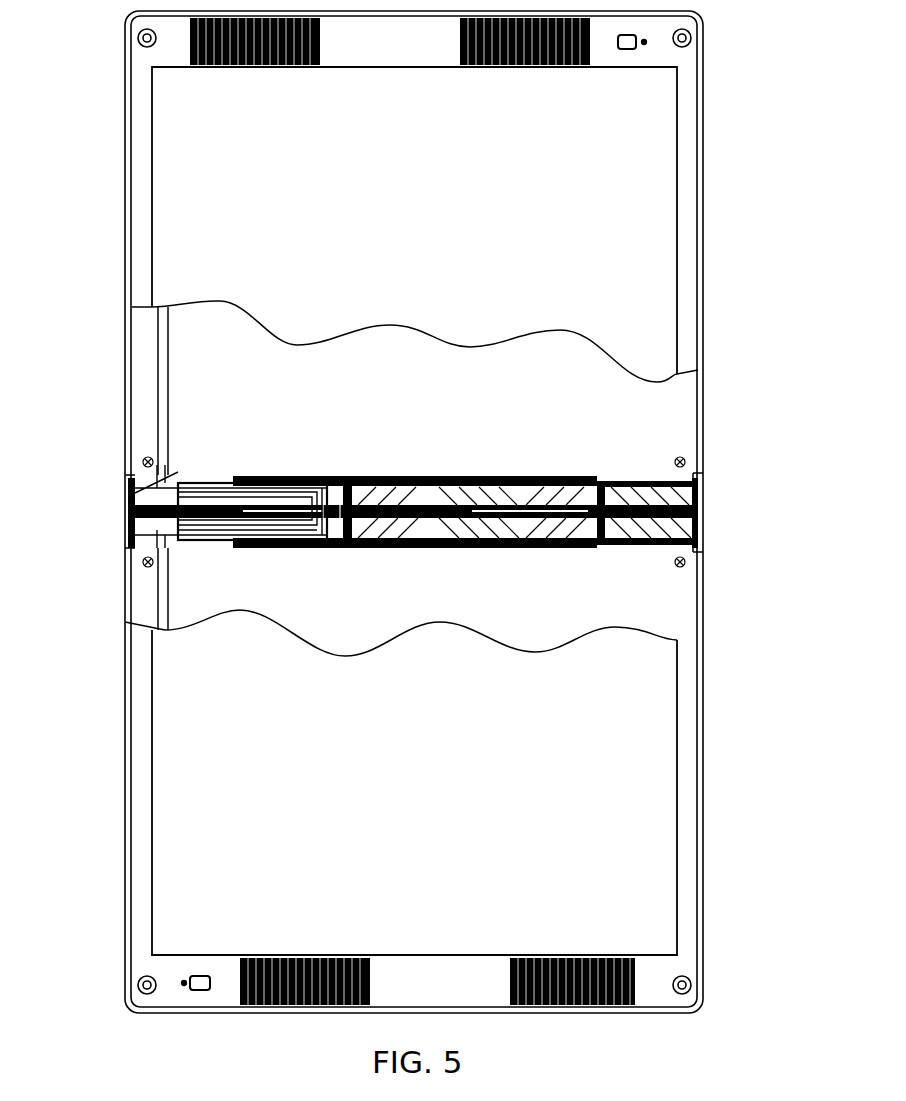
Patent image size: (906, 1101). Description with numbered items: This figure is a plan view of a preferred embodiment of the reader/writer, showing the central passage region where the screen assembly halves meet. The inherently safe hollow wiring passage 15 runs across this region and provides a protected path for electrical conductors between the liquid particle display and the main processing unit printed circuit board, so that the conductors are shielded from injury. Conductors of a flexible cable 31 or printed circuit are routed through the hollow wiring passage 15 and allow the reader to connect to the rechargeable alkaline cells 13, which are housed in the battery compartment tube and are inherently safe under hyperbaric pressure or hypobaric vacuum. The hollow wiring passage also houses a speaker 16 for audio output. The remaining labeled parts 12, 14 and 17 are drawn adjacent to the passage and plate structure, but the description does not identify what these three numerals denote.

The second housing 12 is at (700, 492).
The rechargeable alkaline cells 13 is at (632, 482).
The hinge cover 14 is at (345, 478).
The hollow wiring passage 15 is at (242, 503).
The speaker 16 is at (178, 472).
The end cap 17 is at (128, 523).
The flexible cable 31 is at (263, 493).